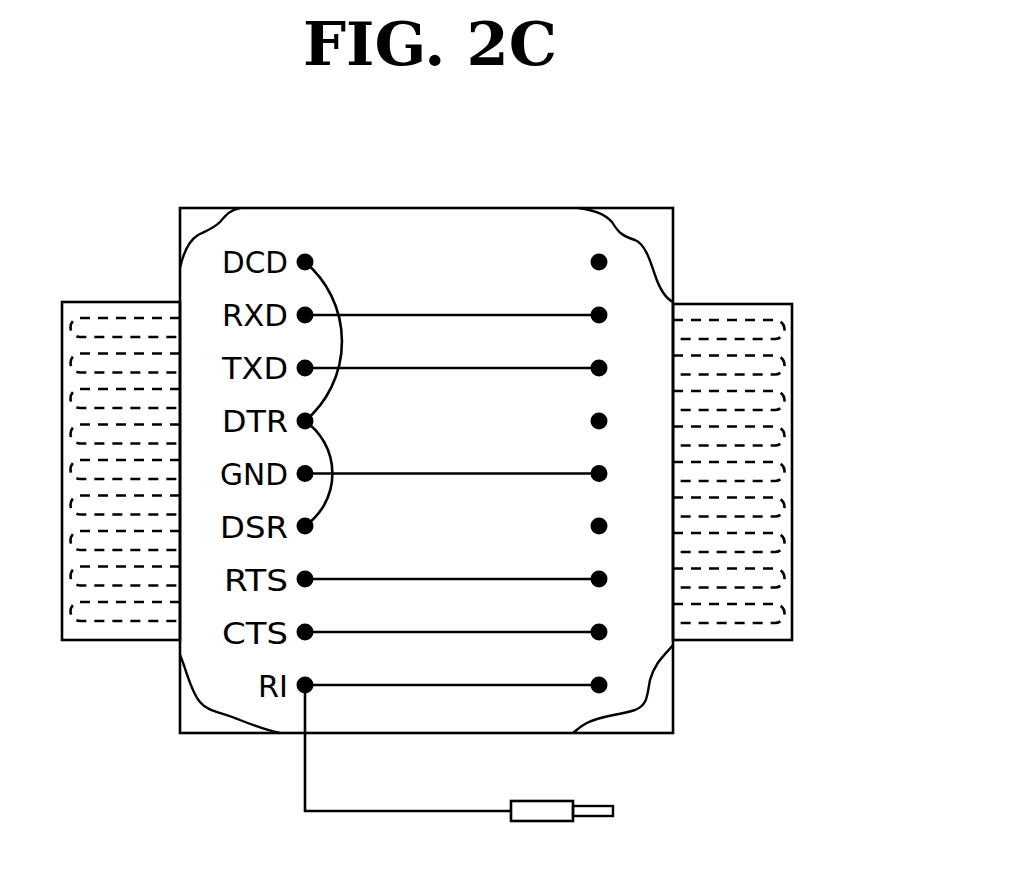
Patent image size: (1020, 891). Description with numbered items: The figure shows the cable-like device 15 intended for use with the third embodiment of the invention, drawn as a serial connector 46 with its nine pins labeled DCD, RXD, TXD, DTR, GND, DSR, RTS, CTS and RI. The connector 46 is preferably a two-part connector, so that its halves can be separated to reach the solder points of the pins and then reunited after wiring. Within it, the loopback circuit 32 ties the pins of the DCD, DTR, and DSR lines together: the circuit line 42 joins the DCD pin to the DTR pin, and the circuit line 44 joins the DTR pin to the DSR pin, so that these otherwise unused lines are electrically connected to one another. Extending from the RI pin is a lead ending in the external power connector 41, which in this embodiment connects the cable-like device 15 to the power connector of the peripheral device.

The cable-like device 15 is at (712, 145).
The loopback circuit 32 is at (333, 287).
The external power connector 41 is at (597, 816).
The circuit line 42 is at (334, 385).
The circuit line 44 is at (333, 493).
The connector 46 is at (180, 240).